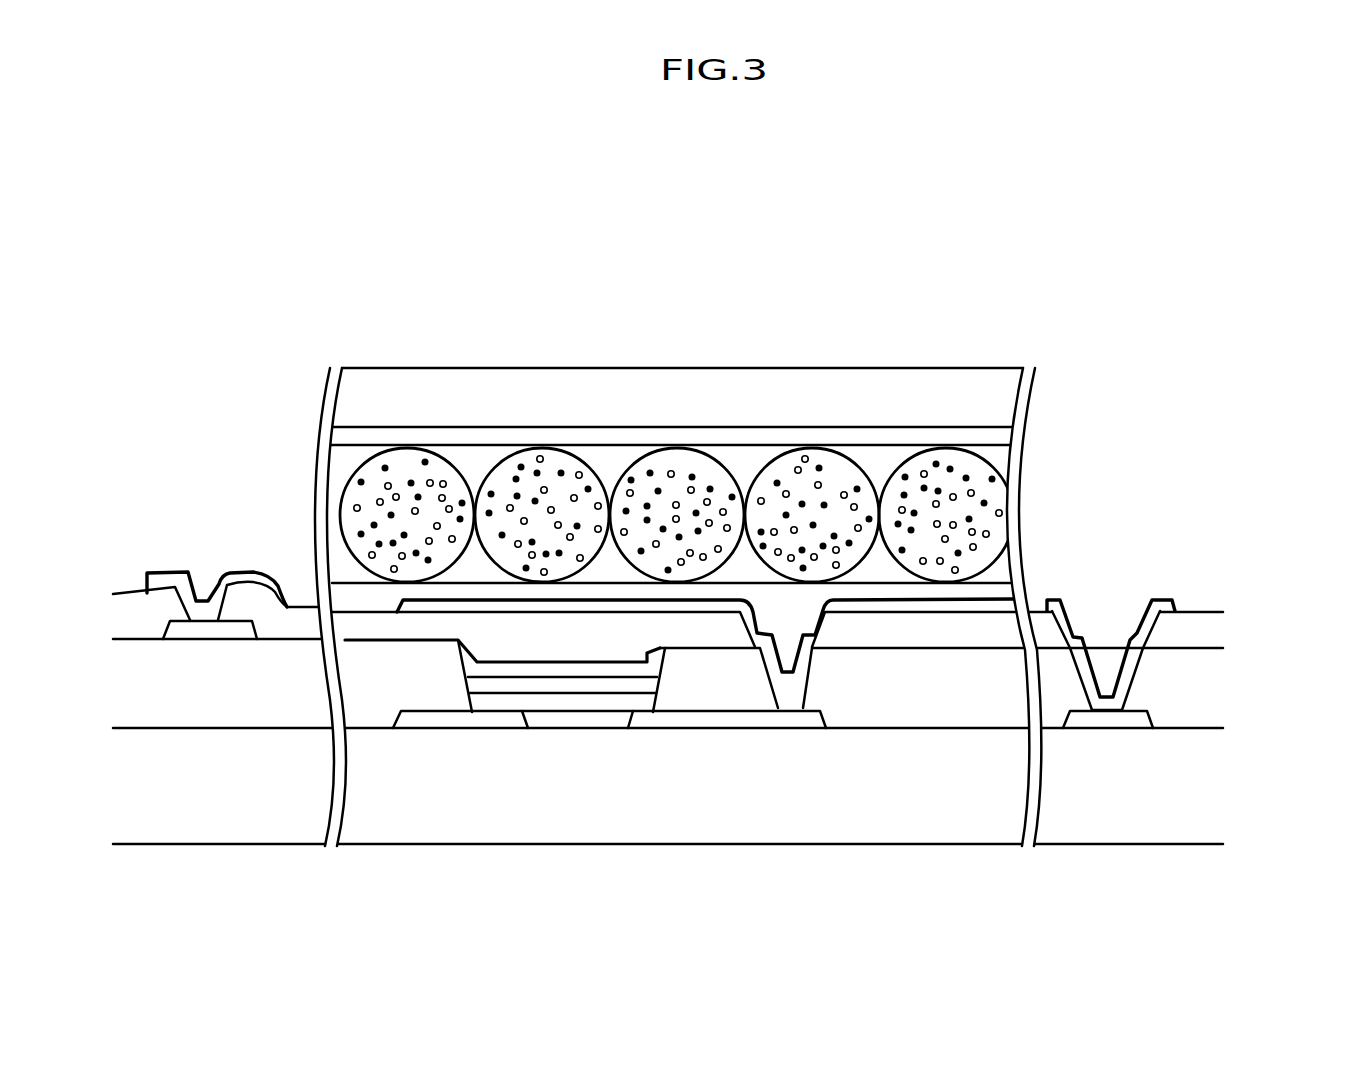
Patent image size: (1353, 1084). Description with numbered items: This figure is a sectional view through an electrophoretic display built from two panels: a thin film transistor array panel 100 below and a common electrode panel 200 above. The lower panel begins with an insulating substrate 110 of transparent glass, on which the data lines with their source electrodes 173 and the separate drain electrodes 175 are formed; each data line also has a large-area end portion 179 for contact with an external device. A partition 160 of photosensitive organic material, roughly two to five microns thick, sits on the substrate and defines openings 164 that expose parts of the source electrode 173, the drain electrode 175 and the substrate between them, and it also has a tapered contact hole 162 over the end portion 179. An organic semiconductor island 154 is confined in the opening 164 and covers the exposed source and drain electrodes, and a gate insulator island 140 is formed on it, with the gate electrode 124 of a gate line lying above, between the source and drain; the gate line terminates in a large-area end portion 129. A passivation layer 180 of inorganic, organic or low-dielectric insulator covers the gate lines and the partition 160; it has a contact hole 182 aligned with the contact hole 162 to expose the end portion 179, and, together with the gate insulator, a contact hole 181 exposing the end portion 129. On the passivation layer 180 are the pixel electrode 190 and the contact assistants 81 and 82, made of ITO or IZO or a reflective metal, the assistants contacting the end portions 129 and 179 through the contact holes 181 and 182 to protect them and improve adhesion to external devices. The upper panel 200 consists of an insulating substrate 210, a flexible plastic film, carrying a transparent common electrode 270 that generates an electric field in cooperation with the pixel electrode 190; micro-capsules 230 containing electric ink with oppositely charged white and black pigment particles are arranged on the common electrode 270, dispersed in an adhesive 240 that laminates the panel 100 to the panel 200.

The thin film transistor array panel 100 is at (1243, 645).
The common electrode panel 200 is at (1057, 420).
The insulating substrate 110 is at (1127, 810).
The gate electrode 124 is at (533, 668).
The end portion of gate line 129 is at (200, 630).
The gate insulator island 140 is at (512, 687).
The organic semiconductor island 154 is at (577, 713).
The partition 160 is at (923, 697).
The contact hole 162 is at (1123, 670).
The opening 164 is at (477, 645).
The source electrode 173 is at (450, 722).
The drain electrode 175 is at (780, 722).
The end portion of data line 179 is at (1097, 713).
The passivation layer 180 is at (363, 625).
The contact hole 181 is at (188, 595).
The contact hole 182 is at (1062, 632).
The pixel electrode 190 is at (870, 605).
The contact assistant 81 is at (155, 572).
The contact assistant 82 is at (1166, 603).
The insulating substrate 210 is at (755, 390).
The micro-capsule 230 is at (630, 467).
The adhesive 240 is at (347, 588).
The common electrode 270 is at (880, 438).